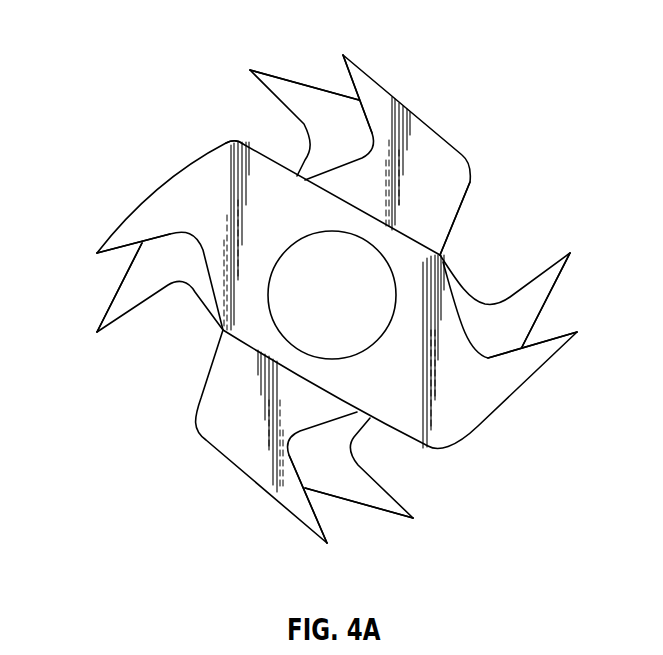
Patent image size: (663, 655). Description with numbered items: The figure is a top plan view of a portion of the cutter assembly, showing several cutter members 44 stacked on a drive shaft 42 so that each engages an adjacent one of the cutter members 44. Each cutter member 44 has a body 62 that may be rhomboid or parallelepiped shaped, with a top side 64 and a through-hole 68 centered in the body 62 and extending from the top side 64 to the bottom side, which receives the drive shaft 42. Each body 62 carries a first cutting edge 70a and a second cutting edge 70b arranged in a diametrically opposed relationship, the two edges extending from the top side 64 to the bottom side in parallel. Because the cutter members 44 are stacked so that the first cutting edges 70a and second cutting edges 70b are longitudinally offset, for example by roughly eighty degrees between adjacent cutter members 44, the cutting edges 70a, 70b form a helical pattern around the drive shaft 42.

The drive shaft 42 is at (300, 238).
The cutter member 44 is at (306, 81).
The body 62 is at (184, 168).
The top side 64 is at (227, 141).
The through-hole 68 is at (363, 352).
The first cutting edge 70a is at (344, 52).
The second cutting edge 70b is at (249, 68).